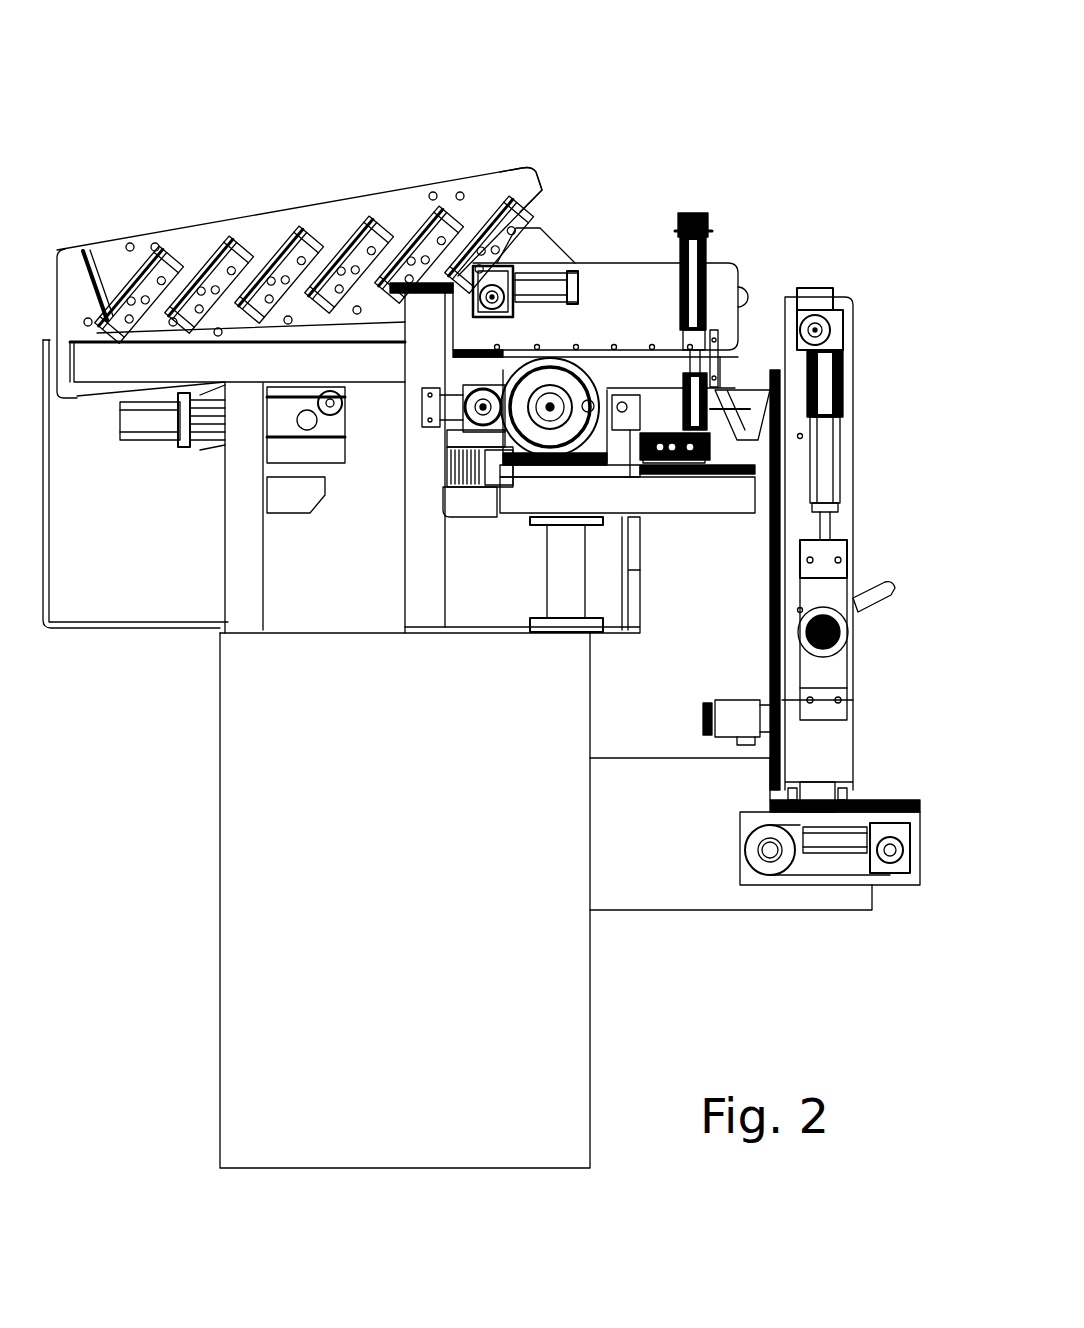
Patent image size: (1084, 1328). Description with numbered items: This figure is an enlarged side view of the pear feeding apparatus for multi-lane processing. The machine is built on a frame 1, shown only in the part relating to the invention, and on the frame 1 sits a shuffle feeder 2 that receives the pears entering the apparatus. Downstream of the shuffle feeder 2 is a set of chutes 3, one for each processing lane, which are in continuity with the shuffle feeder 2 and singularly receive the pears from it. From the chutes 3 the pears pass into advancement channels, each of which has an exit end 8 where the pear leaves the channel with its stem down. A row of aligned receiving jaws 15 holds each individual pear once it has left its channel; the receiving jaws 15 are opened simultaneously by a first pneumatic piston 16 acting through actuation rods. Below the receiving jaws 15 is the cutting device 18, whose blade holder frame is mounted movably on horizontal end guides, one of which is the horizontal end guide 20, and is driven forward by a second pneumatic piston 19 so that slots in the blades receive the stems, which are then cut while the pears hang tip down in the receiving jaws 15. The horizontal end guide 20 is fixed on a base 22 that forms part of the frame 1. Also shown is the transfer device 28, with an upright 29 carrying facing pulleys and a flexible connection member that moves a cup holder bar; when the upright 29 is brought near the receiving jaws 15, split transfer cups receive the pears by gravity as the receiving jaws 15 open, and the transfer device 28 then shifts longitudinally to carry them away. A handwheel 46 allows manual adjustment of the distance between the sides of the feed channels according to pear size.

The frame 1 is at (194, 654).
The shuffle feeder 2 is at (206, 196).
The chutes 3 is at (537, 181).
The exit end 8 is at (758, 390).
The receiving jaws 15 is at (757, 388).
The first pneumatic piston 16 is at (681, 212).
The cutting device 18 is at (663, 477).
The second pneumatic piston 19 is at (562, 460).
The horizontal end guide 20 is at (676, 477).
The base 22 is at (625, 500).
The transfer device 28 is at (855, 498).
The upright 29 is at (848, 557).
The handwheel 46 is at (537, 443).